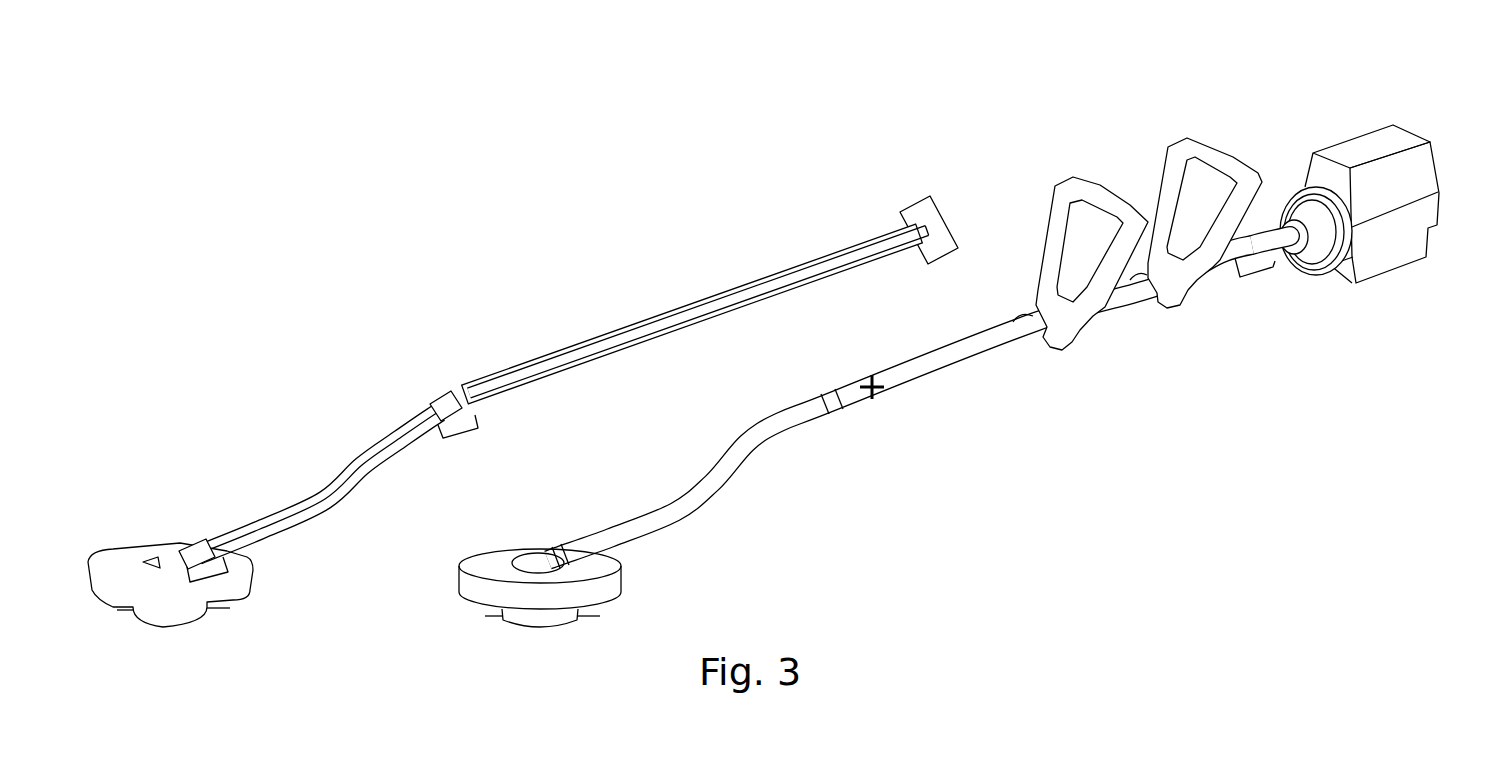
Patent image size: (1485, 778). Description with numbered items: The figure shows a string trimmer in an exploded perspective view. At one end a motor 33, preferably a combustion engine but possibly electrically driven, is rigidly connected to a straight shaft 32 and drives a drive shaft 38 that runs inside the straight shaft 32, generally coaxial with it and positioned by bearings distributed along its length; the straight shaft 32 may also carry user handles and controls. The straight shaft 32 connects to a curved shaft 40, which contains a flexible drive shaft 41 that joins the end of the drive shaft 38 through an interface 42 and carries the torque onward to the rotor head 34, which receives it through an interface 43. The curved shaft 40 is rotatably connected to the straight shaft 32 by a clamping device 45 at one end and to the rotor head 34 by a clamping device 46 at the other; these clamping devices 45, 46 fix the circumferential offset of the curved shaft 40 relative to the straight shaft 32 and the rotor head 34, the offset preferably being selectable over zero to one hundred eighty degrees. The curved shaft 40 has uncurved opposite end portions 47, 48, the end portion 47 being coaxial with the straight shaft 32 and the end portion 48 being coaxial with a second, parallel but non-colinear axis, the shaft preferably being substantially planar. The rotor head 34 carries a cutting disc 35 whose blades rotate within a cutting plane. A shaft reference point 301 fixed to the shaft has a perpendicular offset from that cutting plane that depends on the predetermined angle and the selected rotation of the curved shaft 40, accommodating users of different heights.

The straight shaft 32 is at (883, 257).
The motor 33 is at (1412, 128).
The rotor head 34 is at (610, 588).
The cutting disc 35 is at (152, 623).
The drive shaft 38 is at (602, 356).
The curved shaft 40 is at (725, 402).
The flexible drive shaft 41 is at (337, 495).
The interface 42 is at (440, 402).
The interface 43 is at (197, 542).
The clamping device 45 is at (838, 412).
The clamping device 46 is at (553, 547).
The end portion 47 is at (465, 436).
The end portion 48 is at (209, 580).
The shaft reference point 301 is at (891, 403).